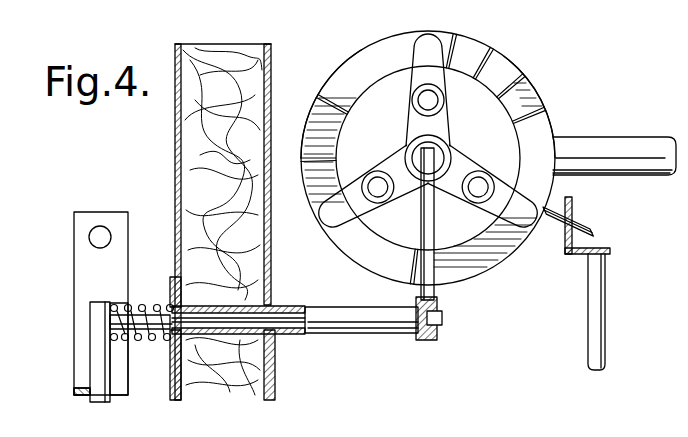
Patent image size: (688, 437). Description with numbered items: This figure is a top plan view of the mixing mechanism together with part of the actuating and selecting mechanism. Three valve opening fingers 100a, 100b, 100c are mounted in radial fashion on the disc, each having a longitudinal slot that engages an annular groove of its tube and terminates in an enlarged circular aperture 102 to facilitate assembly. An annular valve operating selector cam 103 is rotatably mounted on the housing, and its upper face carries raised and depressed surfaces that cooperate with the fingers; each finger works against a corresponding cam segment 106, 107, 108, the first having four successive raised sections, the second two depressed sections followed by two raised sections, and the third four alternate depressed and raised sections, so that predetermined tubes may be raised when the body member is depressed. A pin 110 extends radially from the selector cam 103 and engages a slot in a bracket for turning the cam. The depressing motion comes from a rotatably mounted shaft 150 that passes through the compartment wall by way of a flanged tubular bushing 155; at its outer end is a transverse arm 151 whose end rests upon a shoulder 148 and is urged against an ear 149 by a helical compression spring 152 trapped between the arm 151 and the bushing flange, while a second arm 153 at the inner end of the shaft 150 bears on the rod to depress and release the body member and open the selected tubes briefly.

The valve opening finger 100a is at (486, 192).
The valve opening finger 100b is at (369, 176).
The valve opening finger 100c is at (456, 90).
The enlarged circular aperture 102 is at (400, 158).
The valve operating selector cam 103 is at (545, 132).
The cam segment 106 is at (428, 167).
The cam segment 107 is at (324, 104).
The cam segment 108 is at (529, 92).
The pin 110 is at (590, 229).
The shoulder 148 is at (121, 397).
The ear 149 is at (80, 397).
The shaft 150 is at (295, 334).
The transverse arm 151 is at (100, 354).
The helical compression spring 152 is at (140, 342).
The second arm 153 is at (421, 228).
The flanged tubular bushing 155 is at (367, 324).